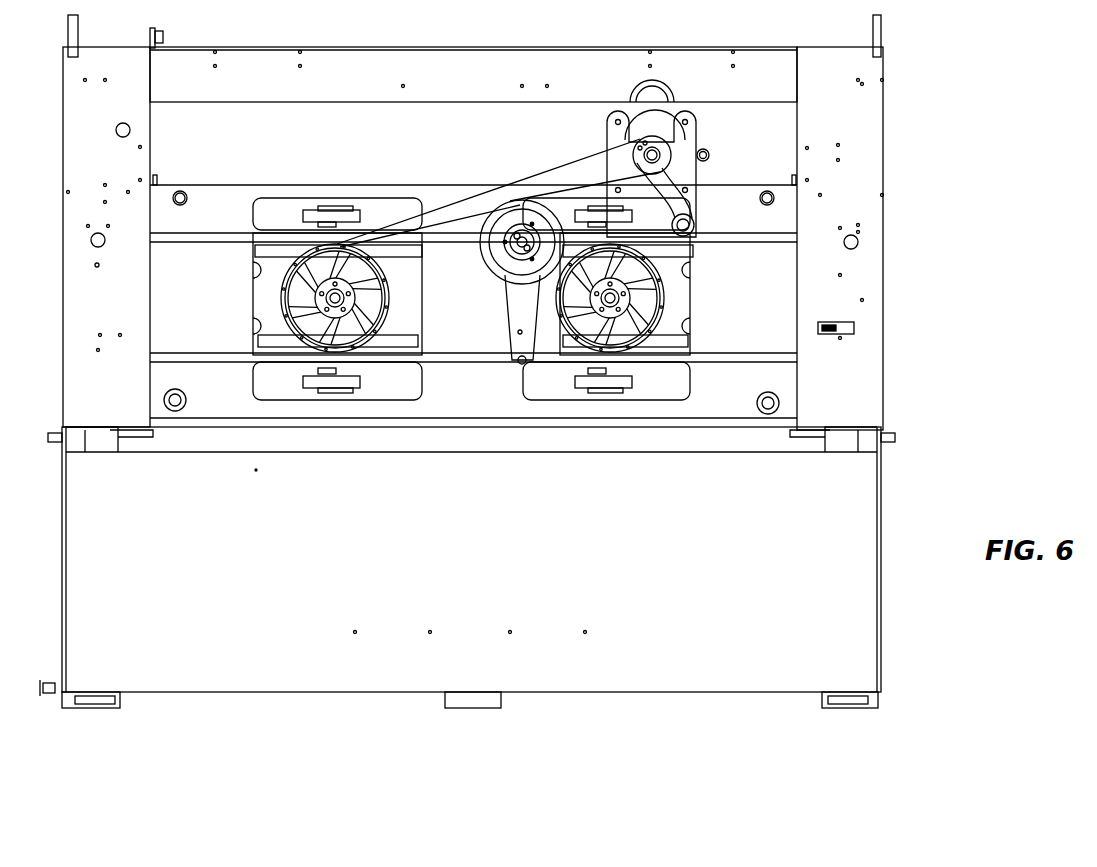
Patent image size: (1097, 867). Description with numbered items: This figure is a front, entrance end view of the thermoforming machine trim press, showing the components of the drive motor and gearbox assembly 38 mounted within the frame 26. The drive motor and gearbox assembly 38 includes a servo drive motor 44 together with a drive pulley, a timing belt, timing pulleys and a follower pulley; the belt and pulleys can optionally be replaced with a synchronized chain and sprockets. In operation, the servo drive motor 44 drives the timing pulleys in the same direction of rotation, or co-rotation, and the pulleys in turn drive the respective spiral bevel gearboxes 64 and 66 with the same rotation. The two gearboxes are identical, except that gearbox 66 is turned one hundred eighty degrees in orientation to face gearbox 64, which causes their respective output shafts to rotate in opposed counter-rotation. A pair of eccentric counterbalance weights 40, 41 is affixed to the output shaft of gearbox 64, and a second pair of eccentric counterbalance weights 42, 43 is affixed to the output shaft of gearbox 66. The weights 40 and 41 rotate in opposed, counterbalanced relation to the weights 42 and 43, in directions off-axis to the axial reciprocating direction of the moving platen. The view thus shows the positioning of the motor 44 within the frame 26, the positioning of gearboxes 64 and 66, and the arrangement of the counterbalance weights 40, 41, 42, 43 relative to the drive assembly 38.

The frame 26 is at (887, 139).
The drive motor and gearbox assembly 38 is at (467, 397).
The eccentric counterbalance weight 40 is at (690, 345).
The eccentric counterbalance weight 41 is at (713, 250).
The eccentric counterbalance weight 42 is at (268, 343).
The eccentric counterbalance weight 43 is at (277, 257).
The servo drive motor 44 is at (670, 110).
The spiral bevel gearbox 64 is at (695, 305).
The spiral bevel gearbox 66 is at (252, 295).